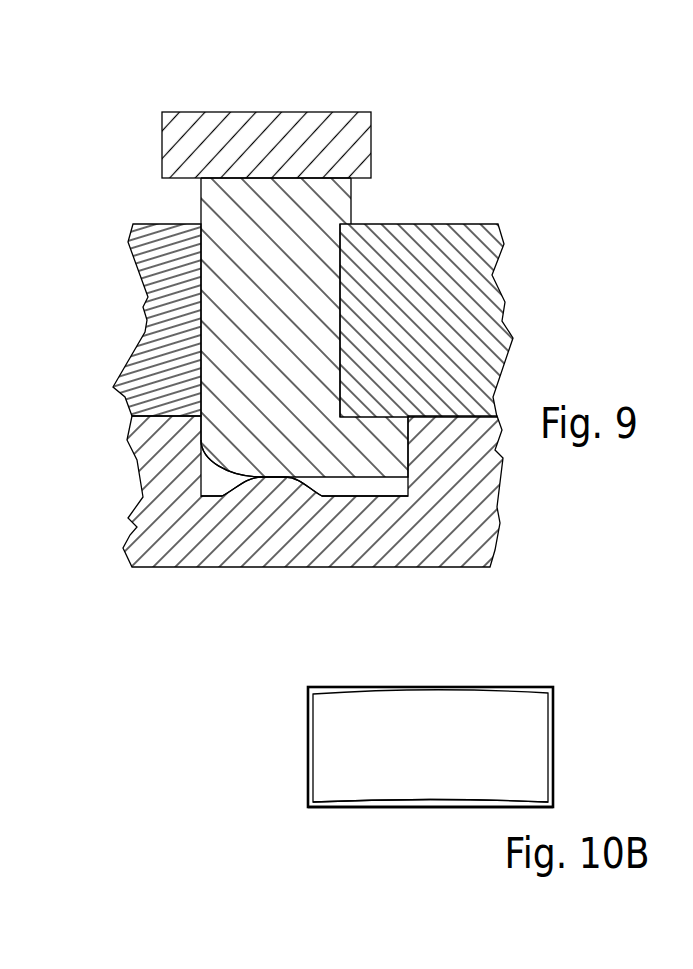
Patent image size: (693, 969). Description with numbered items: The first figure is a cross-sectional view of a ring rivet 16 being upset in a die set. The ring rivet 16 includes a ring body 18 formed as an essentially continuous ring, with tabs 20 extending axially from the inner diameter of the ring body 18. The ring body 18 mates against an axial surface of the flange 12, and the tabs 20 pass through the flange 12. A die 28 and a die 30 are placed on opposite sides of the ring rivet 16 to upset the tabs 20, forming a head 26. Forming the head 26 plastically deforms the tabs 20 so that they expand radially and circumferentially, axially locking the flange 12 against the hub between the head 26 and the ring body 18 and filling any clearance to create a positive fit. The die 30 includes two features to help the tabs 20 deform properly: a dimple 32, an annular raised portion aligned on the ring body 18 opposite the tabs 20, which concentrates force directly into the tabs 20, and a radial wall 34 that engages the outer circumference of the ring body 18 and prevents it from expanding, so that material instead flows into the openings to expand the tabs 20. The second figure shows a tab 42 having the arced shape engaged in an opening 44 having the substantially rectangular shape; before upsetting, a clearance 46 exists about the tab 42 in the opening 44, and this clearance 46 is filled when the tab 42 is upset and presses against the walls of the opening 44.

In FIG. 9, the flange 12 is at (473, 297).
In FIG. 9, the ring rivet 16 is at (304, 262).
In FIG. 9, the ring body 18 is at (240, 440).
In FIG. 9, the tabs 20 is at (222, 292).
In FIG. 9, the head 26 is at (284, 381).
In FIG. 9, the die 28 is at (284, 133).
In FIG. 9, the die 30 is at (366, 533).
In FIG. 9, the dimple 32 is at (263, 487).
In FIG. 9, the radial wall 34 is at (388, 488).
In FIG. 10B, the tab 42 is at (459, 715).
In FIG. 10B, the opening 44 is at (377, 810).
In FIG. 10B, the clearance 46 is at (452, 808).